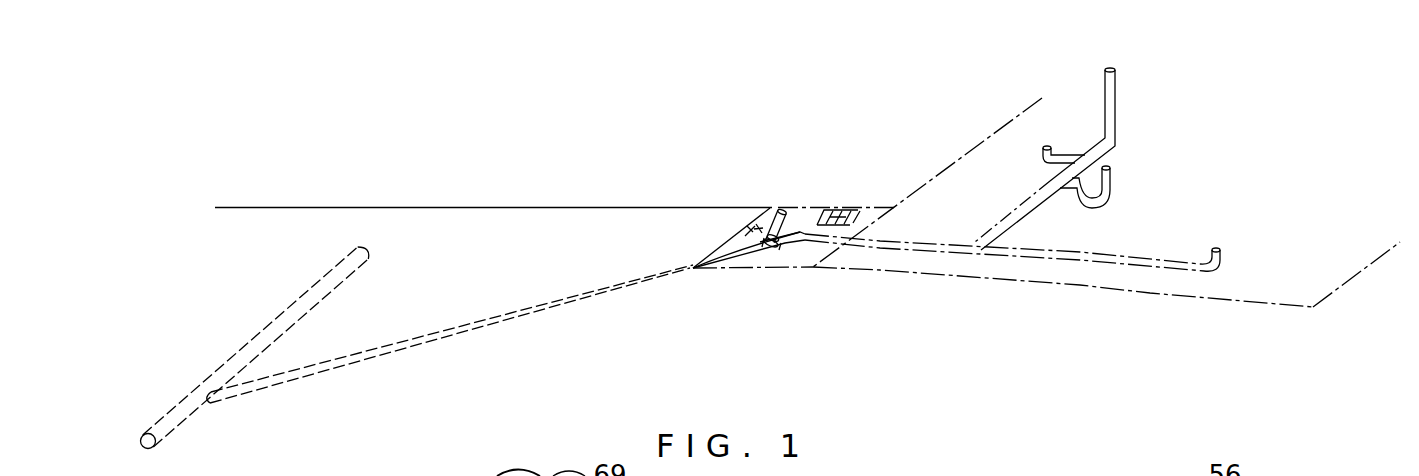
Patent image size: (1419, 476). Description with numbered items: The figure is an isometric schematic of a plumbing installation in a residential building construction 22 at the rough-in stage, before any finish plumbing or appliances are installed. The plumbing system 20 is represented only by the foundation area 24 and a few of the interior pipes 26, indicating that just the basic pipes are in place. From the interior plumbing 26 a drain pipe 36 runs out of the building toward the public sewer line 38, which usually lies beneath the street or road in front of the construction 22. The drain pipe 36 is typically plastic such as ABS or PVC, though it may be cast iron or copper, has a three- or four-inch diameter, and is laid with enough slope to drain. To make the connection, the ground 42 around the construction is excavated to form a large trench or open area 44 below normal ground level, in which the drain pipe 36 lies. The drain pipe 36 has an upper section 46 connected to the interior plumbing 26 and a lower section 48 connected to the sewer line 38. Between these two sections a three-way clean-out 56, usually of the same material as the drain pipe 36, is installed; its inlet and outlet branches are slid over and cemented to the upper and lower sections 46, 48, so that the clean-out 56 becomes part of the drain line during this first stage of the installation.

The plumbing system 20 is at (938, 230).
The residential building construction 22 is at (1023, 106).
The foundation area 24 is at (1010, 283).
The interior pipes 26 is at (1117, 133).
The drain pipe 36 is at (735, 248).
The public sewer line 38 is at (302, 290).
The ground 42 is at (301, 207).
The trench 44 is at (747, 268).
The upper section 46 is at (807, 226).
The lower section 48 is at (608, 295).
The three-way clean-out 56 is at (777, 206).